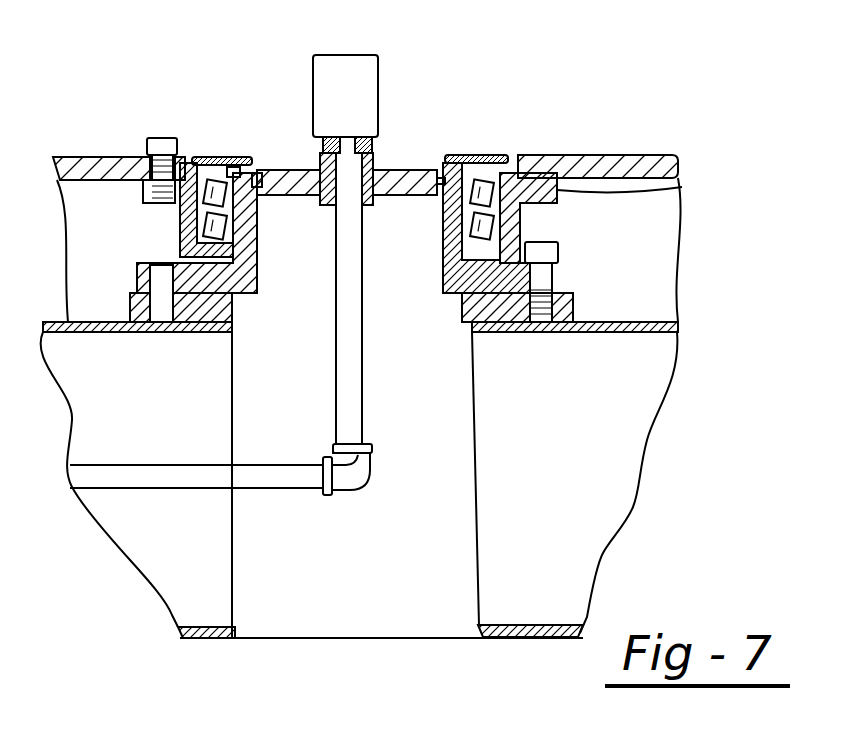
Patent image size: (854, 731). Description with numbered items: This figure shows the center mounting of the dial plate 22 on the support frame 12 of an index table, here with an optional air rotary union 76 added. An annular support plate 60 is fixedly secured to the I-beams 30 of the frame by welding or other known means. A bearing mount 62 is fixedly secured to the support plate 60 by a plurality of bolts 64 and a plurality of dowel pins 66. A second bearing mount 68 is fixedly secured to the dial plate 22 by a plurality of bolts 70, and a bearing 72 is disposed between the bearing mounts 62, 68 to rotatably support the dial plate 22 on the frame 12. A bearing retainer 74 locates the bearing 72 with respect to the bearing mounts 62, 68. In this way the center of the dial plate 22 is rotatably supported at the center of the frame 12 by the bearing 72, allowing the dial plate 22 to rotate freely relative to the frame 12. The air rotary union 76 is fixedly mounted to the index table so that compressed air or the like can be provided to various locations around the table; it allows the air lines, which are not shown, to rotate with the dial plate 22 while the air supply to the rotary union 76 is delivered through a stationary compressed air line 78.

The support frame 12 is at (203, 660).
The dial plate 22 is at (600, 157).
The I-beams 30 is at (196, 550).
The annular support plate 60 is at (237, 307).
The bearing mount 62 is at (257, 255).
The bolts 64 is at (547, 248).
The dowel pins 66 is at (170, 265).
The second bearing mount 68 is at (638, 200).
The bolts 70 is at (165, 138).
The bearing 72 is at (475, 157).
The bearing retainer 74 is at (213, 157).
The air rotary union 76 is at (355, 72).
The stationary compressed air line 78 is at (300, 477).